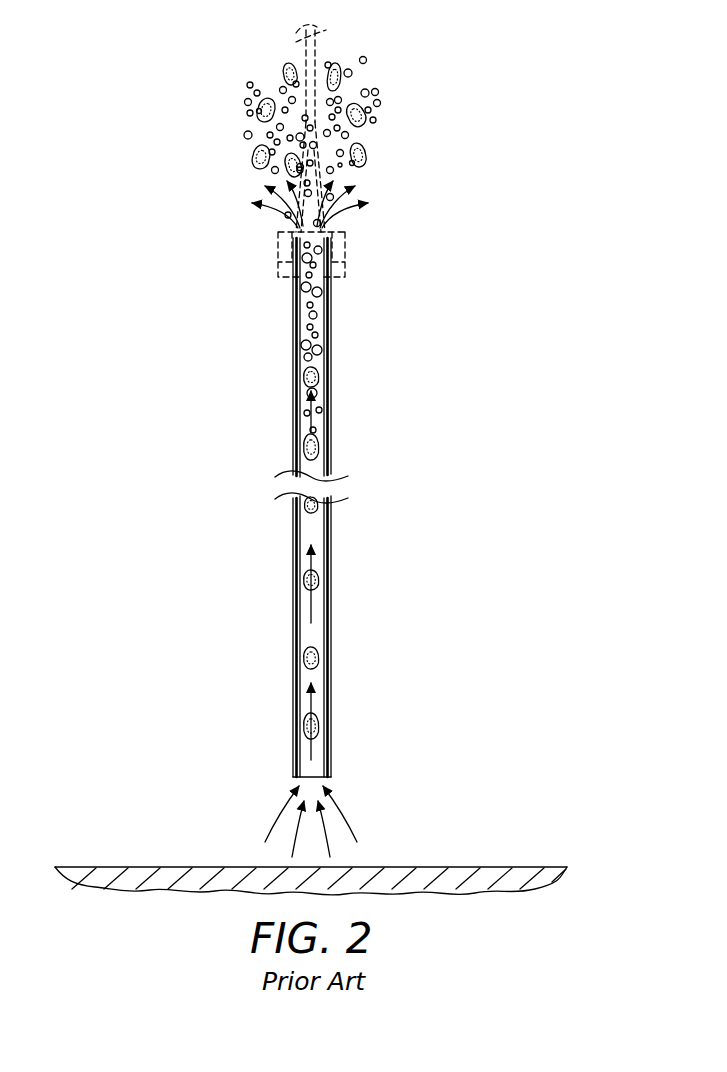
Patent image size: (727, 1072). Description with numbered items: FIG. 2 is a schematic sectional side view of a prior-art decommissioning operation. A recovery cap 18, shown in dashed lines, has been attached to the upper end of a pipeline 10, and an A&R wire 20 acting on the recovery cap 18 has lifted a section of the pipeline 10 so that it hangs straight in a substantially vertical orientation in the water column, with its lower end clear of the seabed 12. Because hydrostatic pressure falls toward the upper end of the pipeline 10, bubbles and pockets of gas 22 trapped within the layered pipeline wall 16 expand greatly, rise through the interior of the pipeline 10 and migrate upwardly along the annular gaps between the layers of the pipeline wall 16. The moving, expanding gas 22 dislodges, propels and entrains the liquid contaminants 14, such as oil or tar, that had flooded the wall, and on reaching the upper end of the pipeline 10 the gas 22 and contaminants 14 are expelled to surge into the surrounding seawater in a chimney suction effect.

The pipeline 10 is at (434, 382).
The seabed 12 is at (100, 867).
The liquid contaminants 14 is at (252, 155).
The pipeline wall 16 is at (297, 407).
The recovery cap 18 is at (345, 254).
The A&R wire 20 is at (303, 47).
The bubbles and pockets of gas 22 is at (249, 106).